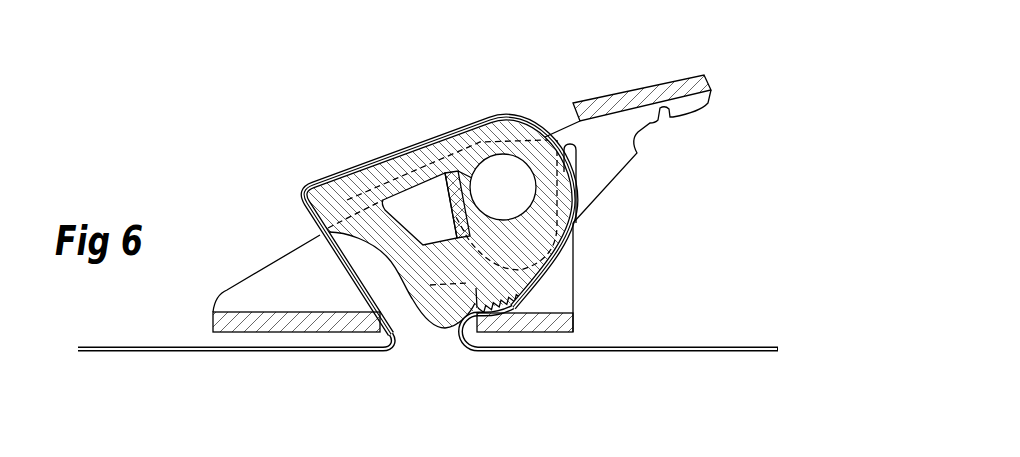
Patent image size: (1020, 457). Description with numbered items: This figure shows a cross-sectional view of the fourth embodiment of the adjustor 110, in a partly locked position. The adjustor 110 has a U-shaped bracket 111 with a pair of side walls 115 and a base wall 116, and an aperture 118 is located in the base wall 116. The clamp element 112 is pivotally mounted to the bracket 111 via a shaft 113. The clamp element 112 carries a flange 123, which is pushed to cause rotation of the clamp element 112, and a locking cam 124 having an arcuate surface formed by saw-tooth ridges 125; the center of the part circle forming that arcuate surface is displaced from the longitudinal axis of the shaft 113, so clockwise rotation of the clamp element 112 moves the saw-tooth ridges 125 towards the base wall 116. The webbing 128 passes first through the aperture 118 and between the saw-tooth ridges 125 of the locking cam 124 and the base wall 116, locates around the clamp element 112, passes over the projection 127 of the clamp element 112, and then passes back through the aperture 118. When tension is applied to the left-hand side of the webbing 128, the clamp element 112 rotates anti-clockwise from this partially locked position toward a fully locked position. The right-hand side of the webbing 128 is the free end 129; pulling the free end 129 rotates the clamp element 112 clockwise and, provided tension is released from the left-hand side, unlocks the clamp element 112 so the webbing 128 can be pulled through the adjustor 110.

The adjustor 110 is at (511, 90).
The bracket 111 is at (612, 305).
The clamp element 112 is at (358, 136).
The shaft 113 is at (523, 201).
The side walls 115 is at (333, 300).
The base wall 116 is at (267, 312).
The aperture 118 is at (418, 340).
The flange 123 is at (708, 76).
The locking cam 124 is at (540, 277).
The saw-tooth ridges 125 is at (520, 313).
The projection 127 is at (330, 172).
The webbing 128 is at (477, 122).
The free end 129 is at (757, 357).